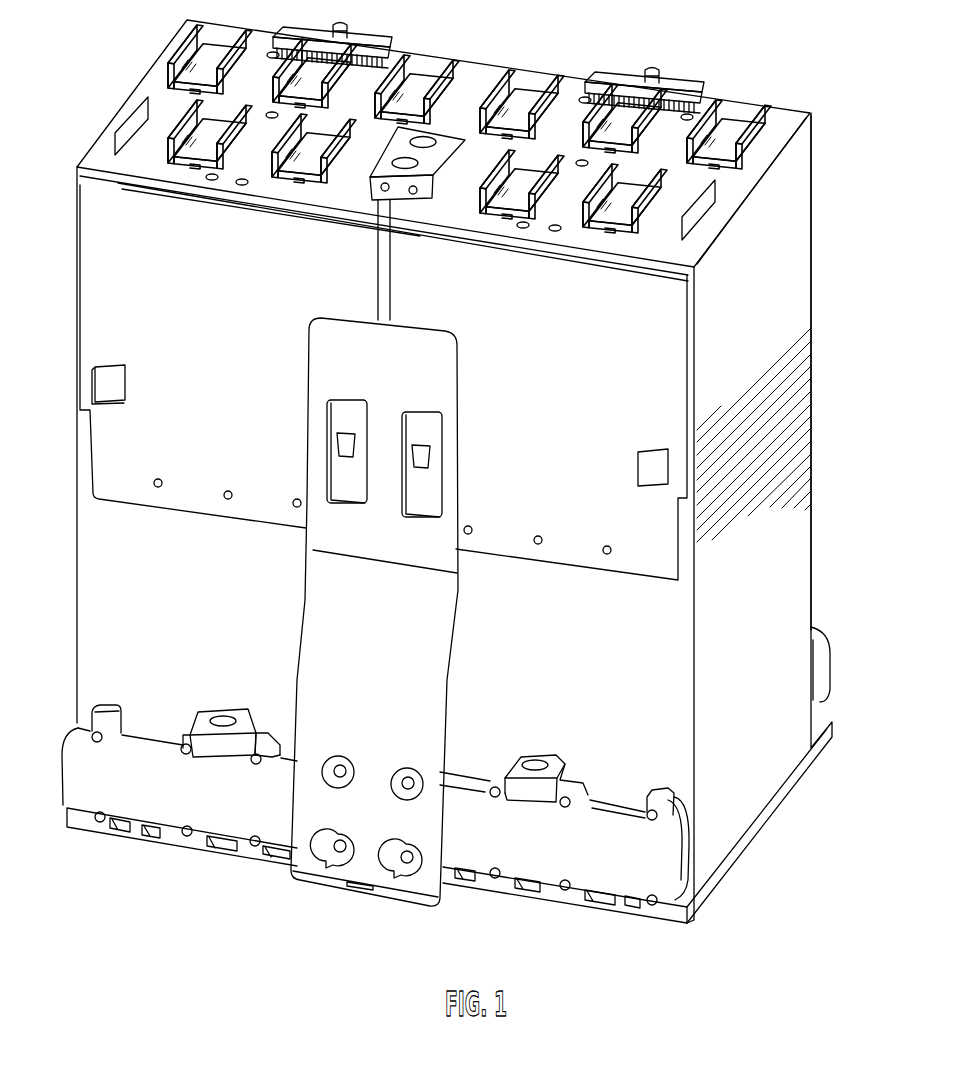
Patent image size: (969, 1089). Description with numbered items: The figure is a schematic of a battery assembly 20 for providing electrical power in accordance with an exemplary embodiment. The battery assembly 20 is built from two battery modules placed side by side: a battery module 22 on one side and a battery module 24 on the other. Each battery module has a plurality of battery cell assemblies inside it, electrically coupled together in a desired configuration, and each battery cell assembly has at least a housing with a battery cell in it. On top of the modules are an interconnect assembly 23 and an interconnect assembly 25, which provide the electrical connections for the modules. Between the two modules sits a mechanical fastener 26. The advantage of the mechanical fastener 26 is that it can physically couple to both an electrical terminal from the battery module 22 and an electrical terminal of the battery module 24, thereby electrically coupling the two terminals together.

The battery assembly 20 is at (812, 96).
The battery module 22 is at (70, 272).
The interconnect assembly 23 is at (160, 67).
The battery module 24 is at (816, 276).
The interconnect assembly 25 is at (728, 180).
The mechanical fastener 26 is at (440, 188).